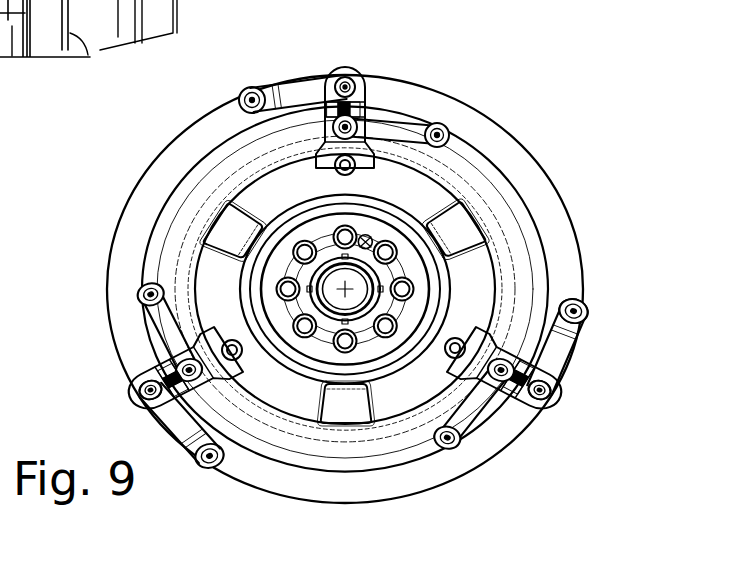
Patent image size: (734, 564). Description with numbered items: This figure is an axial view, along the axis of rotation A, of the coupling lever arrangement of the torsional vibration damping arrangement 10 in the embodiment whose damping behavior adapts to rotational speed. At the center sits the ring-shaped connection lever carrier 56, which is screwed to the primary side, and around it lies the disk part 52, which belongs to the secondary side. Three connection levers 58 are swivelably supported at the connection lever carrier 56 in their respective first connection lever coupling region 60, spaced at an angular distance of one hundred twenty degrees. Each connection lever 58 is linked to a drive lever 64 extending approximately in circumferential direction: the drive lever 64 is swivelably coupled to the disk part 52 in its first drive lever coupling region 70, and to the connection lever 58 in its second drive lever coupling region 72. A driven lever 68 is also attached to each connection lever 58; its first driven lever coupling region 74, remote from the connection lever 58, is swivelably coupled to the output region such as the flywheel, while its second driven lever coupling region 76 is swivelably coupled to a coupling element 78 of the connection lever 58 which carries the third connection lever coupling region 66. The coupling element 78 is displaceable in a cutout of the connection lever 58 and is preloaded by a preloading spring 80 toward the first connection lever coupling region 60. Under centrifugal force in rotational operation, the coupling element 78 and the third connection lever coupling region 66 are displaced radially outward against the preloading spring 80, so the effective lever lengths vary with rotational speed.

The torsional vibration damping arrangement 10 is at (342, 264).
The disk part 52 is at (193, 163).
The connection lever carrier 56 is at (430, 198).
The connection lever 58 is at (366, 87).
The first connection lever coupling region 60 is at (428, 367).
The drive lever 64 is at (297, 92).
The third connection lever coupling region 66 is at (528, 338).
The driven lever 68 is at (414, 128).
The first drive lever coupling region 70 is at (590, 297).
The second drive lever coupling region 72 is at (551, 390).
The first driven lever coupling region 74 is at (458, 445).
The second driven lever coupling region 76 is at (502, 380).
The coupling element 78 is at (166, 397).
The preloading spring 80 is at (165, 374).
The axis of rotation A is at (345, 288).